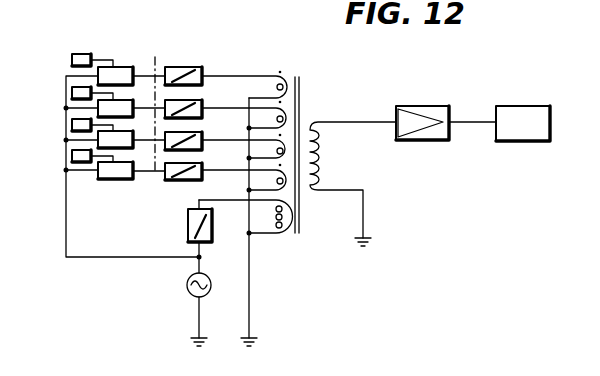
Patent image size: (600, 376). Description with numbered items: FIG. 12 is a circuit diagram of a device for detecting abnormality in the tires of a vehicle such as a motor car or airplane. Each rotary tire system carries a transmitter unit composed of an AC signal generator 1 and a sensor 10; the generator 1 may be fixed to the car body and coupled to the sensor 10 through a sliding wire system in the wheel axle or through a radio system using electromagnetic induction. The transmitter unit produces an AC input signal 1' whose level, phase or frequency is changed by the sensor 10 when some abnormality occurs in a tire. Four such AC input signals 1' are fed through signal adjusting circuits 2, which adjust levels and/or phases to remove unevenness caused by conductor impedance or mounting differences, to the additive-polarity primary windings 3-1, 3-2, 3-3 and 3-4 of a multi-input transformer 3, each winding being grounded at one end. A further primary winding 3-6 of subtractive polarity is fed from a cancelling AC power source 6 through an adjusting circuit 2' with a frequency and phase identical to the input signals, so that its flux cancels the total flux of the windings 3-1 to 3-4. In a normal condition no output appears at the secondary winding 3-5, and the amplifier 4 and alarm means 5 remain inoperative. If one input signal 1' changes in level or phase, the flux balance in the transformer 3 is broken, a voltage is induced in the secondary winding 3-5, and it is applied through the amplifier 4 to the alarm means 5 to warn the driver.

The AC signal generator 1 is at (77, 112).
The sensor 10 is at (120, 67).
The AC input signal 1' is at (166, 105).
The signal adjusting circuit 2 is at (193, 110).
The variable attenuator 2' is at (187, 236).
The multi-input transformer 3 is at (297, 74).
The primary winding 3-1 is at (282, 86).
The primary winding 3-2 is at (283, 125).
The primary winding 3-3 is at (280, 150).
The primary winding 3-4 is at (284, 188).
The secondary winding 3-5 is at (319, 160).
The cancelling primary winding 3-6 is at (279, 236).
The amplifier 4 is at (414, 106).
The alarm means 5 is at (513, 106).
The AC signal source 6 is at (187, 285).